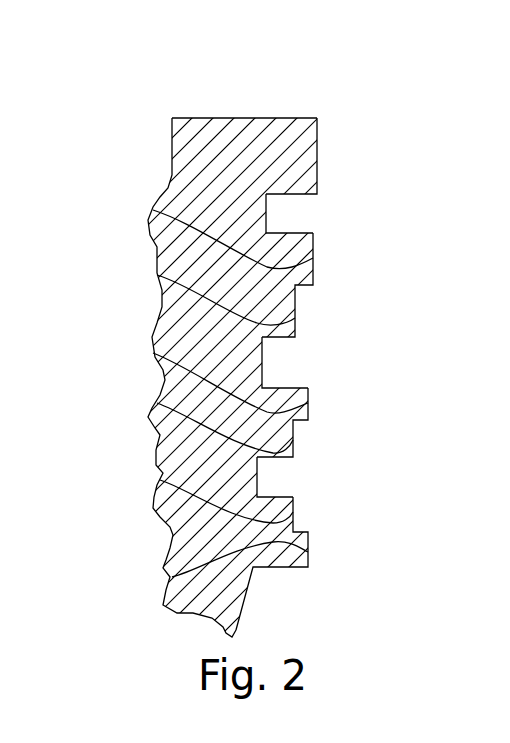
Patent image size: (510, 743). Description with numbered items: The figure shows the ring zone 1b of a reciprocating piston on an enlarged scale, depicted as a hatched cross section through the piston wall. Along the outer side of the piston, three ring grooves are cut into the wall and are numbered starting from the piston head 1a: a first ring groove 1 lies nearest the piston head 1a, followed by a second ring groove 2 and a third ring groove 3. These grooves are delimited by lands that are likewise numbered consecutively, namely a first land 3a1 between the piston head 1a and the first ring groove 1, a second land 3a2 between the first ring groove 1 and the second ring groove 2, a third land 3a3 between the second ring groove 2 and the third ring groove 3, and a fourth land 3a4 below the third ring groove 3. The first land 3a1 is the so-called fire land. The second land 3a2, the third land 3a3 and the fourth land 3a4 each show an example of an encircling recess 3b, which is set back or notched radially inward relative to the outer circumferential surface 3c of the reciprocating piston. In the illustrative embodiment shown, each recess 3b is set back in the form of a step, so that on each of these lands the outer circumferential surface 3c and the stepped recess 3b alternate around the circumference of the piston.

The first ring groove 1 is at (286, 214).
The piston head 1a is at (227, 132).
The ring zone 1b is at (391, 327).
The second ring groove 2 is at (285, 362).
The third ring groove 3 is at (285, 472).
The first land 3a1 is at (318, 150).
The second land 3a2 is at (334, 232).
The third land 3a3 is at (333, 385).
The fourth land 3a4 is at (334, 492).
The encircling recess 3b is at (158, 276).
The outer circumferential surface 3c is at (152, 210).